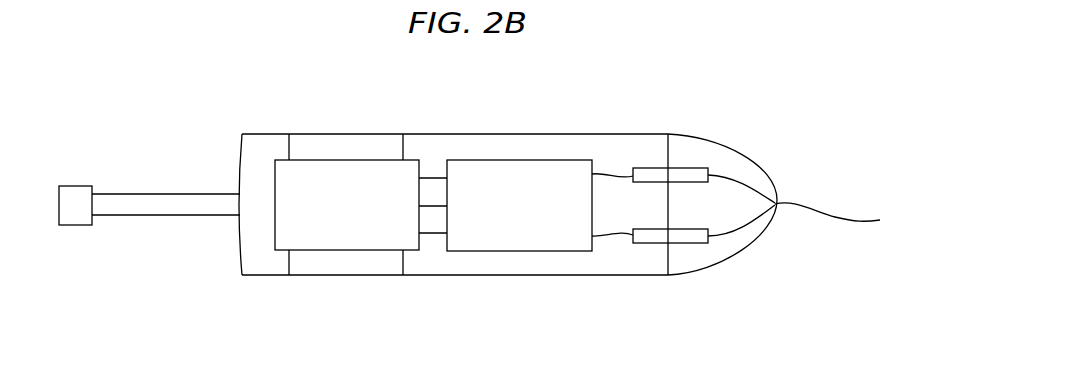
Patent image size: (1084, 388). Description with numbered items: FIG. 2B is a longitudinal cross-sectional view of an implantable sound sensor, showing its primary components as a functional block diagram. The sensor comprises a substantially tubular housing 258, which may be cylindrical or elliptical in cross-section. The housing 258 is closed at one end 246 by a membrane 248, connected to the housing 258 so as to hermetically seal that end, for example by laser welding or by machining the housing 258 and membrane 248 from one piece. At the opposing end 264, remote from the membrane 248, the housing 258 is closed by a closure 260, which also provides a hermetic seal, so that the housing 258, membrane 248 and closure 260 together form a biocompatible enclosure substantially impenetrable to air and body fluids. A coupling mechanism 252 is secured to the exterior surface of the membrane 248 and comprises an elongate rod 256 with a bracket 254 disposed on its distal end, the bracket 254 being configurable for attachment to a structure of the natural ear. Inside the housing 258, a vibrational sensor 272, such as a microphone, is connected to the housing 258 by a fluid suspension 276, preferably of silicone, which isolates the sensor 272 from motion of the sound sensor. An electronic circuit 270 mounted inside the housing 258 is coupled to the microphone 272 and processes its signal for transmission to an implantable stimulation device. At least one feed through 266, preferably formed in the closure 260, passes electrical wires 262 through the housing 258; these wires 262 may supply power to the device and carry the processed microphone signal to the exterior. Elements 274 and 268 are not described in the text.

The one end 246 is at (276, 93).
The coupling mechanism 252 is at (187, 163).
The bracket 254 is at (73, 183).
The elongate rod 256 is at (120, 217).
The membrane 248 is at (240, 245).
The housing 258 is at (603, 133).
The fluid suspension 276 is at (358, 265).
The vibrational sensor 272 is at (357, 218).
The electrical connection 274 is at (438, 233).
The electronic circuit 270 is at (533, 217).
The wires 268 is at (618, 237).
The feed through 266 is at (680, 235).
The closure 260 is at (715, 147).
The electrical wires 262 is at (837, 218).
The opposing end 264 is at (786, 188).